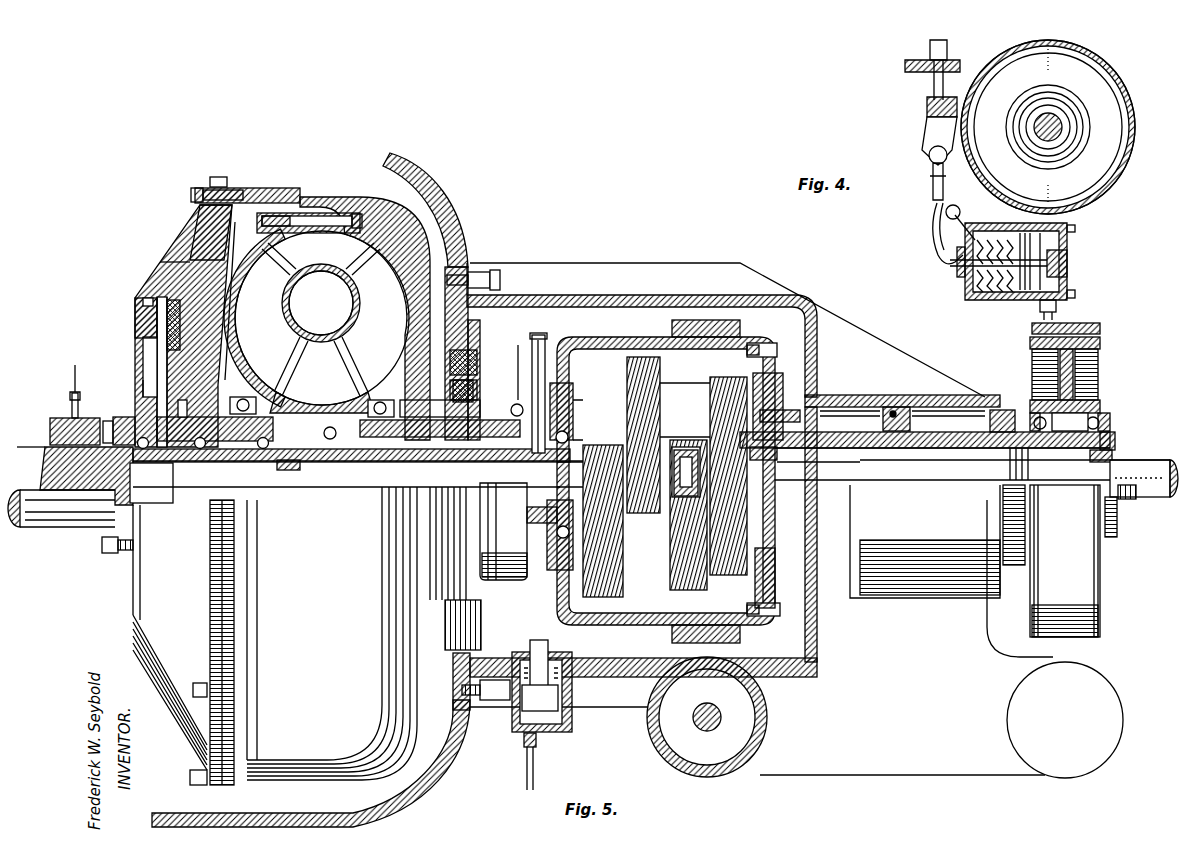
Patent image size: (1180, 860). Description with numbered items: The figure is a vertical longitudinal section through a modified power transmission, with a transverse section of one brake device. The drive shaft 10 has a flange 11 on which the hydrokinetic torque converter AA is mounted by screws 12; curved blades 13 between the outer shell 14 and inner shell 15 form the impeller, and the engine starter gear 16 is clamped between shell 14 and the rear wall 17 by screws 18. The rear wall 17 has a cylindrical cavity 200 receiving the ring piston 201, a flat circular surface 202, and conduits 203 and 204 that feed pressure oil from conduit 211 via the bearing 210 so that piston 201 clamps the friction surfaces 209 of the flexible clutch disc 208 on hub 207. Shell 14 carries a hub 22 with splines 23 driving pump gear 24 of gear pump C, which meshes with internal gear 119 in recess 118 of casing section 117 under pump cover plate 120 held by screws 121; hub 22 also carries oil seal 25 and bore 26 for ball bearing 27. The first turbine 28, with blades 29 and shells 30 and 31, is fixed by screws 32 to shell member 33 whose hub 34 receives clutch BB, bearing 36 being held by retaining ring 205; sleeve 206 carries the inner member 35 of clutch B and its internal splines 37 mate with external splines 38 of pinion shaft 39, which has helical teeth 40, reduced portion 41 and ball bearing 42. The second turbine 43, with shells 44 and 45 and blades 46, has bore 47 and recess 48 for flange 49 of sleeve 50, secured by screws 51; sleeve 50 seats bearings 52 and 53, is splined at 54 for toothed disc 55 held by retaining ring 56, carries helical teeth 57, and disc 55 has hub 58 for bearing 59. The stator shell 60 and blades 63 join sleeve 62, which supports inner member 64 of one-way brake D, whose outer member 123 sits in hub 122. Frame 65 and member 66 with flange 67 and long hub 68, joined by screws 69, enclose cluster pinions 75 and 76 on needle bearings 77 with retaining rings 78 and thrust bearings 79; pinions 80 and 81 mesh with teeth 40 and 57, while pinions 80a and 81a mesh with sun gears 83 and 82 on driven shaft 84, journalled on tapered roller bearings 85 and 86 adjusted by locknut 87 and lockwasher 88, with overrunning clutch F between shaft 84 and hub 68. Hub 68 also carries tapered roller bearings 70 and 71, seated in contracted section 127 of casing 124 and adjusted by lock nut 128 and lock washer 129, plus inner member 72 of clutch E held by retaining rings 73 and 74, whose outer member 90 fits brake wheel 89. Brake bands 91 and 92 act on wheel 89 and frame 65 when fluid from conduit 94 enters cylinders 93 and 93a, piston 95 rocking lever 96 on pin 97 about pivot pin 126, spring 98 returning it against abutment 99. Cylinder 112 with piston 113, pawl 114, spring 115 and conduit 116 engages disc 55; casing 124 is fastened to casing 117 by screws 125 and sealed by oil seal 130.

In FIG. 5, the drive shaft 10 is at (36, 450).
In FIG. 5, the flange 11 is at (124, 418).
In FIG. 5, the screws 12 is at (107, 420).
In FIG. 5, the curved blades 13 is at (392, 315).
In FIG. 5, the outer shell 14 is at (410, 283).
In FIG. 5, the inner shell 15 is at (358, 303).
In FIG. 5, the engine starter gear 16 is at (214, 182).
In FIG. 5, the rear wall 17 is at (196, 238).
In FIG. 5, the screws 18 is at (192, 190).
In FIG. 5, the hub 22 is at (445, 360).
In FIG. 5, the splines 23 is at (445, 420).
In FIG. 5, the pump gear 24 is at (498, 388).
In FIG. 5, the oil seal 25 is at (445, 395).
In FIG. 5, the bore 26 is at (380, 400).
In FIG. 5, the ball bearing 27 is at (398, 395).
In FIG. 5, the turbine 28 is at (352, 259).
In FIG. 5, the curved blades 29 is at (313, 261).
In FIG. 5, the inner toroidal shell 30 is at (317, 286).
In FIG. 5, the outer toroidal shell 31 is at (322, 233).
In FIG. 5, the screws 32 is at (362, 220).
In FIG. 5, the shell member 33 is at (250, 240).
In FIG. 5, the hub 34 is at (200, 413).
In FIG. 5, the inner member 35 is at (151, 483).
In FIG. 5, the ball bearing 36 is at (258, 400).
In FIG. 5, the multiple internal splines 37 is at (200, 520).
In FIG. 5, the multiple external splines 38 is at (172, 505).
In FIG. 5, the long pinion shaft 39 is at (330, 500).
In FIG. 5, the helical teeth 40 is at (640, 513).
In FIG. 5, the reduced portion 41 is at (672, 500).
In FIG. 5, the ball bearing 42 is at (674, 450).
In FIG. 5, the turbine 43 is at (262, 262).
In FIG. 5, the outer toroidal shell 44 is at (238, 323).
In FIG. 5, the inner toroidal shell 45 is at (283, 300).
In FIG. 5, the curved blades 46 is at (266, 307).
In FIG. 5, the bore 47 is at (245, 398).
In FIG. 5, the recess 48 is at (291, 473).
In FIG. 5, the flange portion 49 is at (332, 405).
In FIG. 5, the long hollow sleeve 50 is at (372, 462).
In FIG. 5, the screws 51 is at (327, 440).
In FIG. 5, the ball bearing 52 is at (342, 437).
In FIG. 5, the ball bearing 53 is at (590, 445).
In FIG. 5, the spline 54 is at (530, 478).
In FIG. 5, the toothed disc 55 is at (536, 335).
In FIG. 5, the retaining ring 56 is at (580, 445).
In FIG. 5, the helical teeth 57 is at (580, 475).
In FIG. 5, the hub 58 is at (512, 440).
In FIG. 5, the ball bearing 59 is at (518, 404).
In FIG. 5, the inner toroidal shell 60 is at (323, 327).
In FIG. 5, the long hollow sleeve 62 is at (397, 437).
In FIG. 5, the curved blades 63 is at (329, 363).
In FIG. 5, the inner member 64 is at (505, 487).
In FIG. 5, the hollow cylindrical frame 65 is at (626, 345).
In FIG. 5, the member 66 is at (775, 585).
In FIG. 5, the circular flange portion 67 is at (762, 343).
In FIG. 5, the long hub 68 is at (968, 448).
In FIG. 5, the screws 69 is at (780, 351).
In FIG. 5, the tapered roller bearing 70 is at (805, 430).
In FIG. 5, the tapered roller bearing 71 is at (1005, 412).
In FIG. 5, the inner member 72 is at (1045, 448).
In FIG. 5, the retaining ring 73 is at (1028, 448).
In FIG. 5, the retaining ring 74 is at (1112, 436).
In FIG. 5, the cluster pinion 75 is at (675, 390).
In FIG. 5, the cluster pinion 76 is at (660, 575).
In FIG. 5, the needle bearings 77 is at (575, 392).
In FIG. 5, the retaining rings 78 is at (785, 393).
In FIG. 5, the thrust bearings 79 is at (575, 390).
In FIG. 5, the pinions 80 is at (630, 366).
In FIG. 5, the pinions 80a is at (722, 378).
In FIG. 5, the pinions 81 is at (623, 550).
In FIG. 5, the pinions 81a is at (690, 590).
In FIG. 5, the sun gear 82 is at (692, 440).
In FIG. 5, the sun gear 83 is at (722, 552).
In FIG. 5, the driven shaft 84 is at (1146, 463).
In FIG. 5, the tapered roller bearing 85 is at (758, 460).
In FIG. 5, the tapered roller bearing 86 is at (1102, 462).
In FIG. 5, the locknut 87 is at (1128, 500).
In FIG. 5, the lockwasher 88 is at (1110, 538).
In FIG. 5, the brake wheel 89 is at (1100, 340).
In FIG. 4, the brake wheel 89 is at (1108, 172).
In FIG. 5, the outer member 90 is at (1102, 418).
In FIG. 5, the brake band 91 is at (1088, 323).
In FIG. 4, the brake band 91 is at (1112, 74).
In FIG. 5, the brake band 92 is at (676, 322).
In FIG. 5, the cylinder 93 is at (1119, 695).
In FIG. 4, the cylinder 93 is at (988, 300).
In FIG. 5, the cylinder 93a is at (658, 748).
In FIG. 4, the conduit 94 is at (1040, 306).
In FIG. 4, the piston 95 is at (1032, 245).
In FIG. 4, the lever 96 is at (932, 250).
In FIG. 4, the pin 97 is at (932, 187).
In FIG. 4, the spring 98 is at (985, 273).
In FIG. 5, the abutment 99 is at (721, 717).
In FIG. 4, the abutment 99 is at (1067, 266).
In FIG. 5, the cylinder 112 is at (572, 718).
In FIG. 5, the piston 113 is at (558, 692).
In FIG. 5, the pawl 114 is at (548, 645).
In FIG. 5, the spring 115 is at (560, 668).
In FIG. 5, the conduit 116 is at (534, 760).
In FIG. 5, the casing section 117 is at (445, 190).
In FIG. 5, the recess 118 is at (445, 340).
In FIG. 5, the internal gear 119 is at (470, 360).
In FIG. 5, the pump cover plate 120 is at (482, 632).
In FIG. 5, the screws 121 is at (482, 610).
In FIG. 5, the hub 122 is at (517, 400).
In FIG. 5, the outer member 123 is at (475, 420).
In FIG. 5, the casing 124 is at (615, 295).
In FIG. 5, the screws 125 is at (492, 272).
In FIG. 4, the pivot pins 126 is at (946, 213).
In FIG. 5, the contracted section 127 is at (870, 395).
In FIG. 5, the lock nut 128 is at (1025, 535).
In FIG. 5, the lock washer 129 is at (1005, 540).
In FIG. 5, the oil seal 130 is at (896, 410).
In FIG. 5, the cylindrical cavity 200 is at (146, 298).
In FIG. 5, the ring piston 201 is at (136, 318).
In FIG. 5, the flat circular surface 202 is at (176, 345).
In FIG. 5, the conduit 203 is at (85, 475).
In FIG. 5, the conduit 204 is at (143, 380).
In FIG. 5, the retaining ring 205 is at (282, 395).
In FIG. 5, the sleeve 206 is at (235, 480).
In FIG. 5, the hub 207 is at (157, 395).
In FIG. 5, the flexible clutch disc 208 is at (143, 360).
In FIG. 5, the friction surfaces 209 is at (160, 262).
In FIG. 5, the bearing 210 is at (57, 418).
In FIG. 5, the conduit 211 is at (72, 373).
In FIG. 5, the hydrokinetic torque converter AA is at (200, 230).
In FIG. 5, the ball bearing and overrunning clutch B is at (215, 419).
In FIG. 5, the combination ball bearing and overrunning clutch BB is at (203, 464).
In FIG. 5, the gear pump C is at (478, 372).
In FIG. 5, the one-way brake D is at (487, 477).
In FIG. 5, the combination overrunning clutch and ball bearing E is at (1070, 413).
In FIG. 5, the overrunning clutch F is at (800, 462).